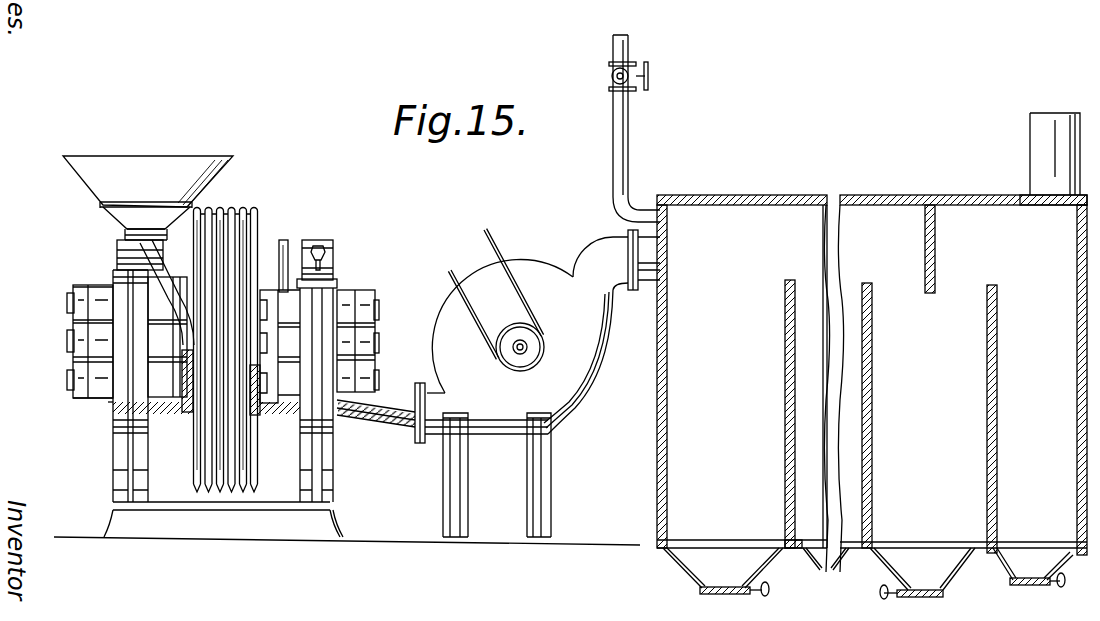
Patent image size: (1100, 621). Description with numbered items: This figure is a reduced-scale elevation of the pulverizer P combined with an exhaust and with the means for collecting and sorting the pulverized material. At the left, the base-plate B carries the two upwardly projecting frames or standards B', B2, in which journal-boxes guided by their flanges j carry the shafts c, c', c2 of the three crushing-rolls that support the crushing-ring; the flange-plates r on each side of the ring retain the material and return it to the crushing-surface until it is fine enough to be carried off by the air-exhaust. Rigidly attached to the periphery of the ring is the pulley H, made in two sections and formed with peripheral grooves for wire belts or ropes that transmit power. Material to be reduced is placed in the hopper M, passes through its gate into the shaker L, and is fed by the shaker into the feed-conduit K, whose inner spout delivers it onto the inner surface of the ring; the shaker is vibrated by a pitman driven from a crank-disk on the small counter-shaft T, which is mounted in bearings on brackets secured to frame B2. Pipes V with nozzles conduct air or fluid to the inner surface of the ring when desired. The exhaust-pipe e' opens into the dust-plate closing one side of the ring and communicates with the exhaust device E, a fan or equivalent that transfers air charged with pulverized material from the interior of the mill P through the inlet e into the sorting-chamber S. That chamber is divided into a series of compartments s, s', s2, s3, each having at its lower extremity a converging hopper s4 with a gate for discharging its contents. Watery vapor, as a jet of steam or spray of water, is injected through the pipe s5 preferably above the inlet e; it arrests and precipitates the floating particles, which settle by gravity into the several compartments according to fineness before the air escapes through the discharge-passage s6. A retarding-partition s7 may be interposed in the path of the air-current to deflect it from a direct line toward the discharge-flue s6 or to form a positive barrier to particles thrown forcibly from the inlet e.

The hopper M is at (185, 168).
The shaker L is at (124, 237).
The frame or standard B' is at (122, 371).
The feed-conduit K is at (192, 272).
The cylinder block J' is at (224, 340).
The shaft of crushing-roll C' c' is at (225, 307).
The shaft of crushing-roll C c is at (219, 346).
The shaft of crushing-roll C2 c2 is at (68, 378).
The flange of journal-box j is at (108, 402).
The flange-plate r is at (187, 414).
The pulley H is at (249, 246).
The pulverizer P is at (286, 214).
The pipe V is at (288, 256).
The frame or standard B2 is at (333, 272).
The counter-shaft T is at (337, 296).
The exhaust-pipe e' is at (381, 413).
The base-plate B is at (347, 479).
The exhaust device E is at (560, 250).
The inlet e is at (658, 260).
The pipe s5 is at (634, 128).
The sorting-chamber S is at (880, 181).
The compartment s is at (731, 406).
The compartment s' is at (817, 425).
The compartment s2 is at (891, 415).
The compartment s3 is at (1010, 419).
The converging hopper s4 is at (868, 573).
The discharge-passage s6 is at (1045, 159).
The retarding-partition s7 is at (943, 249).